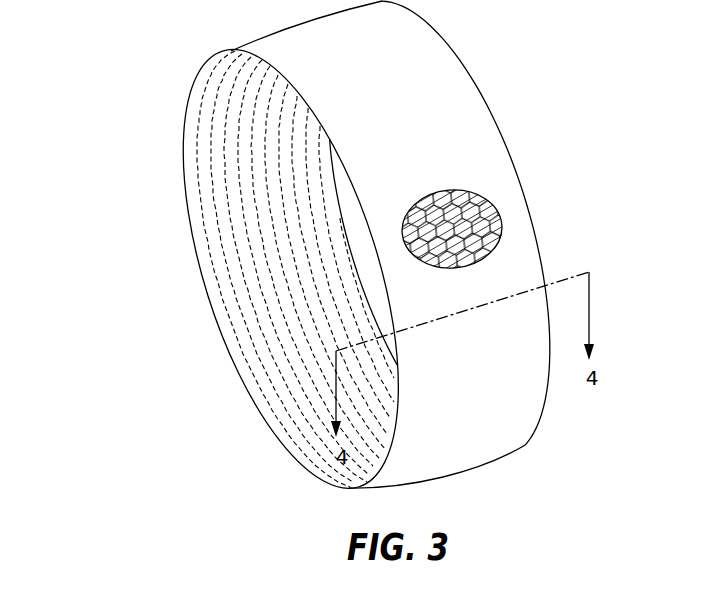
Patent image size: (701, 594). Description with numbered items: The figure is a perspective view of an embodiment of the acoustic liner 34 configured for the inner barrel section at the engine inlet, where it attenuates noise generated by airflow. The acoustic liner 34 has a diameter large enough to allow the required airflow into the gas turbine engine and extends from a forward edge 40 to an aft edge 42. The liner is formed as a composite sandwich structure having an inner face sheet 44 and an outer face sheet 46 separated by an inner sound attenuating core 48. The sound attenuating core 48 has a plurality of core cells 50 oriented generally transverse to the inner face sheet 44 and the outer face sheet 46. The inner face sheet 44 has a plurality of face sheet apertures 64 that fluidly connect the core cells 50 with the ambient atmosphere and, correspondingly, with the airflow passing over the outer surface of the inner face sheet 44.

The acoustic liner 34 is at (114, 53).
The forward edge 40 is at (292, 456).
The aft edge 42 is at (473, 80).
The inner face sheet 44 is at (228, 232).
The outer face sheet 46 is at (412, 29).
The inner sound attenuating core 48 is at (480, 197).
The core cells 50 is at (483, 252).
The face sheet apertures 64 is at (290, 353).